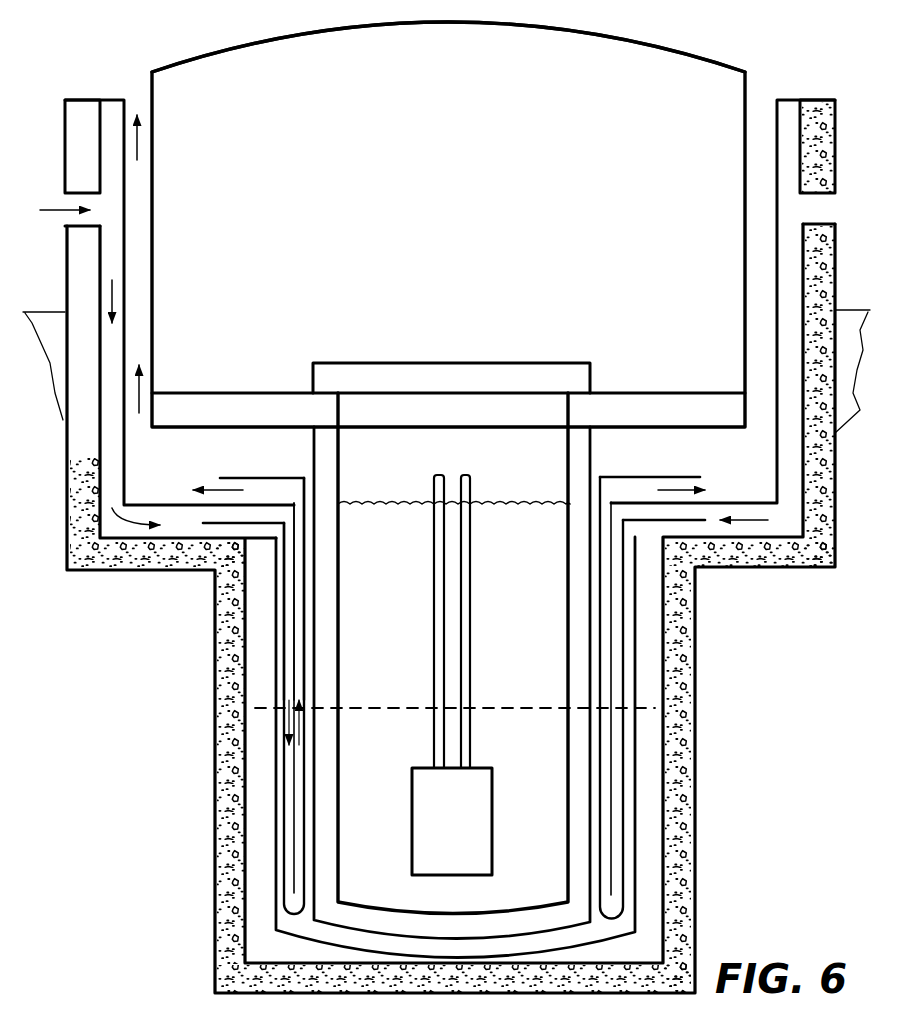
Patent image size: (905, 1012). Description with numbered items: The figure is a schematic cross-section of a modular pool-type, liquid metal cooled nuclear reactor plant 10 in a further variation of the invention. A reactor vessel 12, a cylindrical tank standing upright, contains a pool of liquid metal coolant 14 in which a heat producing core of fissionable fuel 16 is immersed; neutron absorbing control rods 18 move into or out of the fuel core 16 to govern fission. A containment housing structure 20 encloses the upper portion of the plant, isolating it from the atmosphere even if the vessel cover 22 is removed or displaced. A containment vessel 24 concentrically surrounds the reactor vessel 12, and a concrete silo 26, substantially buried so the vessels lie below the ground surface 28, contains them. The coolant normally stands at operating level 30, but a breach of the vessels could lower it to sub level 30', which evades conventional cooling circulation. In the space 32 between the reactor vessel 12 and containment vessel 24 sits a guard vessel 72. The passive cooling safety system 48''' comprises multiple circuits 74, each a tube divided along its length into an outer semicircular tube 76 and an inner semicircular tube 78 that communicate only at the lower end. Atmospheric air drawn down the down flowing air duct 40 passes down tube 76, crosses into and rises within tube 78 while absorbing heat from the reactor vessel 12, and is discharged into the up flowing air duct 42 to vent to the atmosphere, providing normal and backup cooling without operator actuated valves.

The nuclear reactor plant 10 is at (668, 33).
The reactor vessel 12 is at (567, 470).
The liquid metal coolant 14 is at (545, 836).
The core of fissionable fuel 16 is at (467, 836).
The control rods 18 is at (470, 590).
The containment housing structure 20 is at (345, 33).
The vessel cover 22 is at (528, 365).
The containment vessel 24 is at (592, 637).
The concrete silo 26 is at (693, 690).
The ground surface 28 is at (857, 380).
The normal operating level 30 is at (454, 474).
The sub level 30' is at (455, 683).
The space 32 is at (635, 830).
The down flowing air duct 40 is at (115, 463).
The up flowing air duct 42 is at (140, 316).
The passive cooling safety system 48''' is at (227, 696).
The guard vessel 72 is at (640, 750).
The circuits 74 is at (310, 647).
The outer semicircular tube 76 is at (292, 607).
The inner semicircular tube 78 is at (300, 553).